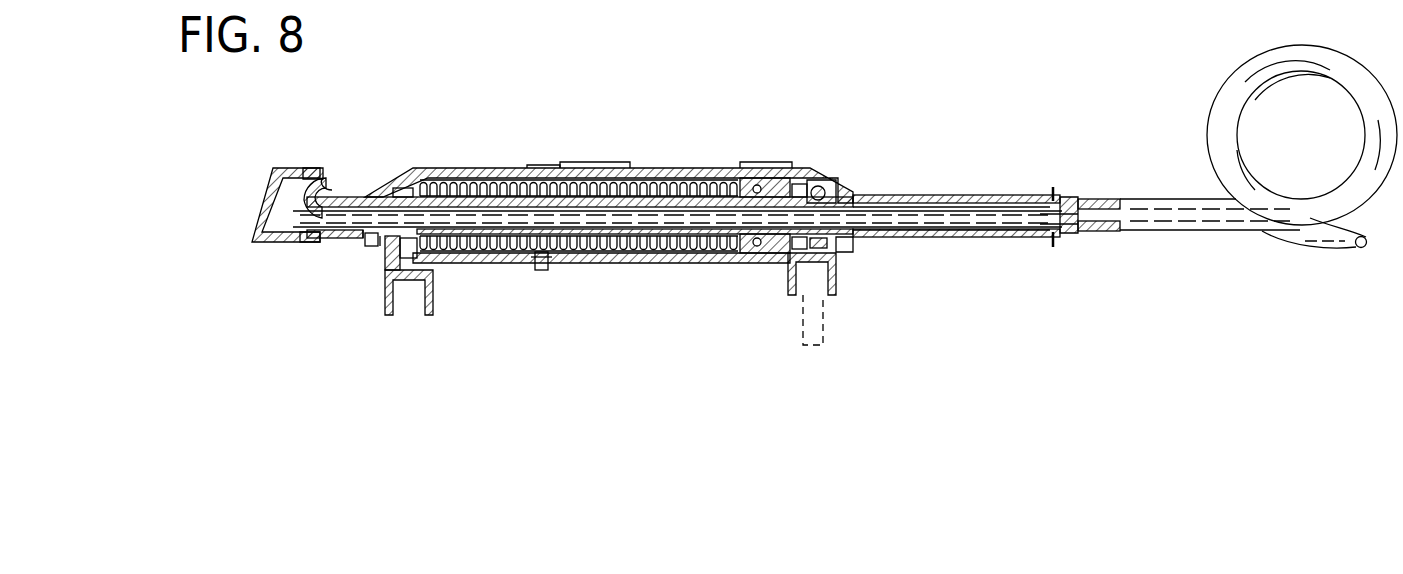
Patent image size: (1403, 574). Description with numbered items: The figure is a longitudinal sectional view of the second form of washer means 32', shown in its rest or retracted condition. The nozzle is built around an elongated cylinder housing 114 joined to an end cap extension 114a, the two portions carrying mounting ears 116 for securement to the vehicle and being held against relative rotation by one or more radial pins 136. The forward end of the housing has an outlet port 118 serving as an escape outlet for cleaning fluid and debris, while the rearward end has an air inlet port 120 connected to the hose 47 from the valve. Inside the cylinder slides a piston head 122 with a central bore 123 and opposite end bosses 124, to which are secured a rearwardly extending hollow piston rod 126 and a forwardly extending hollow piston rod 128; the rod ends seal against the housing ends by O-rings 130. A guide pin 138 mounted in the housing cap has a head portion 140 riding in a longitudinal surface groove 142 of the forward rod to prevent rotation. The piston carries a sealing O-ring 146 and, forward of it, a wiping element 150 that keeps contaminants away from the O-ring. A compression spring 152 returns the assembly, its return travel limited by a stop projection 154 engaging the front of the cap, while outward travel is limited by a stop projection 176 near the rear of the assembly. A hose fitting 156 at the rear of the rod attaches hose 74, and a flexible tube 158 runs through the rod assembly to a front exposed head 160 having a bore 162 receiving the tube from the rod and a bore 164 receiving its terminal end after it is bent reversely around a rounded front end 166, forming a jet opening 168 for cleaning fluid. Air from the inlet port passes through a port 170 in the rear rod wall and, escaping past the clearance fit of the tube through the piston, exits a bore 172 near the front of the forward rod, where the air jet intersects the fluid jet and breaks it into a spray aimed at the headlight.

The washer means 32' is at (397, 129).
The hose 47 is at (823, 315).
The hose 74 is at (1098, 198).
The cylinder housing 114 is at (670, 168).
The end cap extension 114a is at (500, 167).
The mounting ears 116 is at (597, 162).
The outlet port 118 is at (382, 297).
The air inlet port 120 is at (836, 272).
The piston head 122 is at (764, 255).
The central bore 123 is at (735, 258).
The end bosses 124 is at (722, 177).
The rearwardly extending hollow piston rod 126 is at (905, 195).
The forwardly extending hollow piston rod 128 is at (438, 190).
The O-rings 130 is at (820, 190).
The radial pins 136 is at (542, 270).
The guide pin 138 is at (378, 249).
The head portion 140 is at (368, 240).
The longitudinal surface groove 142 is at (468, 255).
The sealing O-ring 146 is at (777, 178).
The wiping element 150 is at (752, 254).
The compression spring 152 is at (602, 262).
The stop projection 154 is at (364, 195).
The hose fitting 156 is at (1073, 228).
The flexible tube 158 is at (948, 215).
The front exposed head 160 is at (293, 225).
The bore 162 is at (313, 244).
The bore 164 is at (303, 166).
The rounded front end 166 is at (294, 206).
The jet opening 168 is at (333, 177).
The port 170 is at (812, 180).
The bore 172 is at (332, 187).
The stop projection 176 is at (1053, 195).